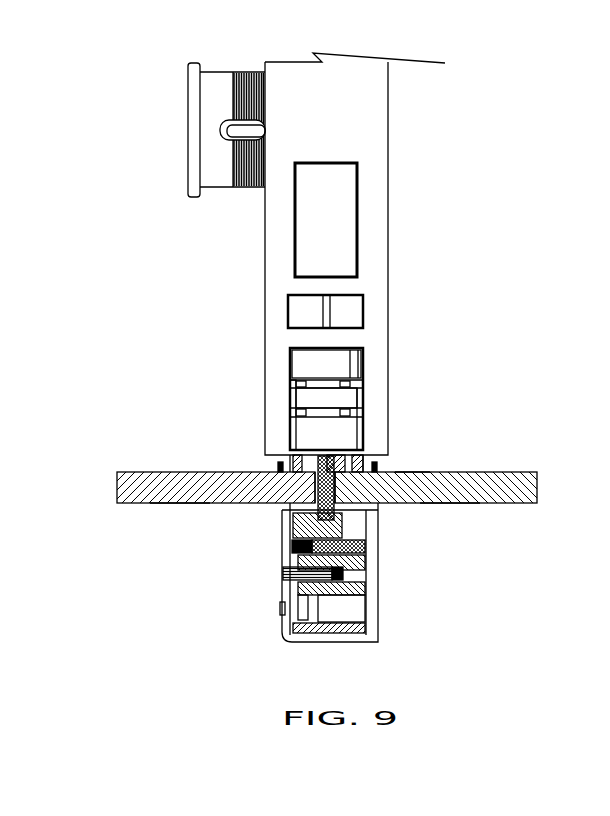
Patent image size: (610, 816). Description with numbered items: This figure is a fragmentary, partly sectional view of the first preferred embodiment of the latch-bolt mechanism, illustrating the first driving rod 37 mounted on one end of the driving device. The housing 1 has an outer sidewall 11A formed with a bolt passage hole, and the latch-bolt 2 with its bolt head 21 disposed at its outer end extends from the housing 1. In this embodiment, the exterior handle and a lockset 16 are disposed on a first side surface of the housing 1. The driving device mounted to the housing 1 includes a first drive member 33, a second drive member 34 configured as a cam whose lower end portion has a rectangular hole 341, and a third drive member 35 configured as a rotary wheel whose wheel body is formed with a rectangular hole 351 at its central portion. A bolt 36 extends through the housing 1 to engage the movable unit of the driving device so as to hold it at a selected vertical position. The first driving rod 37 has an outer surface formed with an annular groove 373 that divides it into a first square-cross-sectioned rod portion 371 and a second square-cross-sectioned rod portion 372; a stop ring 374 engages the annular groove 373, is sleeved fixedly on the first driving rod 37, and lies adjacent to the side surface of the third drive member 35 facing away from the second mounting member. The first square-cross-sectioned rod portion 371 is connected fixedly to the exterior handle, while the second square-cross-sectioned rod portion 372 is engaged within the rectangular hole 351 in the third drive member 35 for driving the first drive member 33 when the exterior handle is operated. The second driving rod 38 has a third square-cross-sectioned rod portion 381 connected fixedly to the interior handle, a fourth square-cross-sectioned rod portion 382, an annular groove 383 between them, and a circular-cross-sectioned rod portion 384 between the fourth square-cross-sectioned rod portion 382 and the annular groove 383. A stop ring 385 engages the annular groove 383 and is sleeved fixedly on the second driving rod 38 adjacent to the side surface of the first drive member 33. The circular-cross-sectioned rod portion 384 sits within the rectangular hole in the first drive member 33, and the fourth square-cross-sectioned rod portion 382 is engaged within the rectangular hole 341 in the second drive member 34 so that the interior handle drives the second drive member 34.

The housing 1 is at (367, 48).
The outer sidewall 11A is at (365, 163).
The lockset 16 is at (187, 148).
The latch-bolt 2 is at (317, 378).
The bolt head 21 is at (307, 365).
The rectangular hole 341 is at (352, 408).
The rectangular hole 351 is at (292, 440).
The annular groove 373 is at (277, 471).
The stop ring 374 is at (281, 462).
The fourth square-cross-sectioned rod portion 382 is at (357, 458).
The annular groove 383 is at (412, 472).
The stop ring 385 is at (388, 463).
The first driving rod 37 is at (148, 475).
The first square-cross-sectioned rod portion 371 is at (177, 493).
The second square-cross-sectioned rod portion 372 is at (316, 490).
The second driving rod 38 is at (497, 468).
The third square-cross-sectioned rod portion 381 is at (452, 490).
The circular-cross-sectioned rod portion 384 is at (338, 493).
The first drive member 33 is at (360, 528).
The second drive member 34 is at (365, 562).
The third drive member 35 is at (327, 587).
The bolt 36 is at (283, 585).